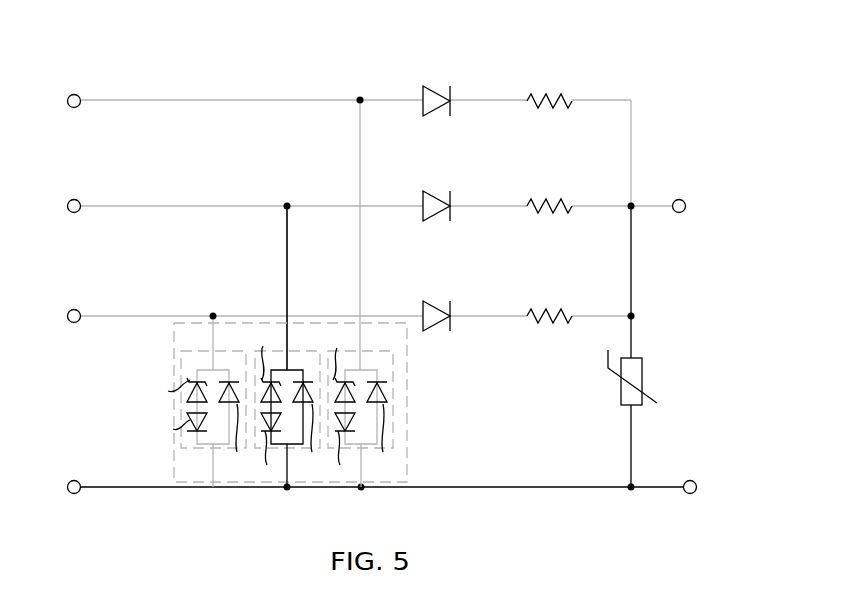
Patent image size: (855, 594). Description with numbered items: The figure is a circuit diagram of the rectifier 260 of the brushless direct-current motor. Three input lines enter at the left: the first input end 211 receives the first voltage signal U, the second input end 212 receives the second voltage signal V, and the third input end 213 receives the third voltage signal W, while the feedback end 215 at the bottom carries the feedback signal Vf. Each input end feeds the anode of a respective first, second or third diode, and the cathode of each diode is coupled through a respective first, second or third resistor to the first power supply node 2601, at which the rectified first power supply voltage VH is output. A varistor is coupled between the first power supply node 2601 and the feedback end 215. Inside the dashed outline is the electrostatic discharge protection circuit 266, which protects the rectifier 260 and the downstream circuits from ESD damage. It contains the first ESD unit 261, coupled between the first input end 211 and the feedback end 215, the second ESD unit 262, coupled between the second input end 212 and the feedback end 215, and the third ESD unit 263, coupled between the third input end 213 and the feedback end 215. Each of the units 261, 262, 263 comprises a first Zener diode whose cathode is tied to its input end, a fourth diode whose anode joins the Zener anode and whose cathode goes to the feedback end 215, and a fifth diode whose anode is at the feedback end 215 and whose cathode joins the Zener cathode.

The first input end 211 is at (72, 95).
The second input end 212 is at (72, 200).
The third input end 213 is at (72, 310).
The feedback end 215 is at (72, 481).
The rectifier 260 is at (692, 60).
The first power supply node 2601 is at (682, 200).
The first ESD unit 261 is at (353, 450).
The second ESD unit 262 is at (278, 450).
The third ESD unit 263 is at (188, 450).
The electrostatic discharge protection circuit 266 is at (408, 413).